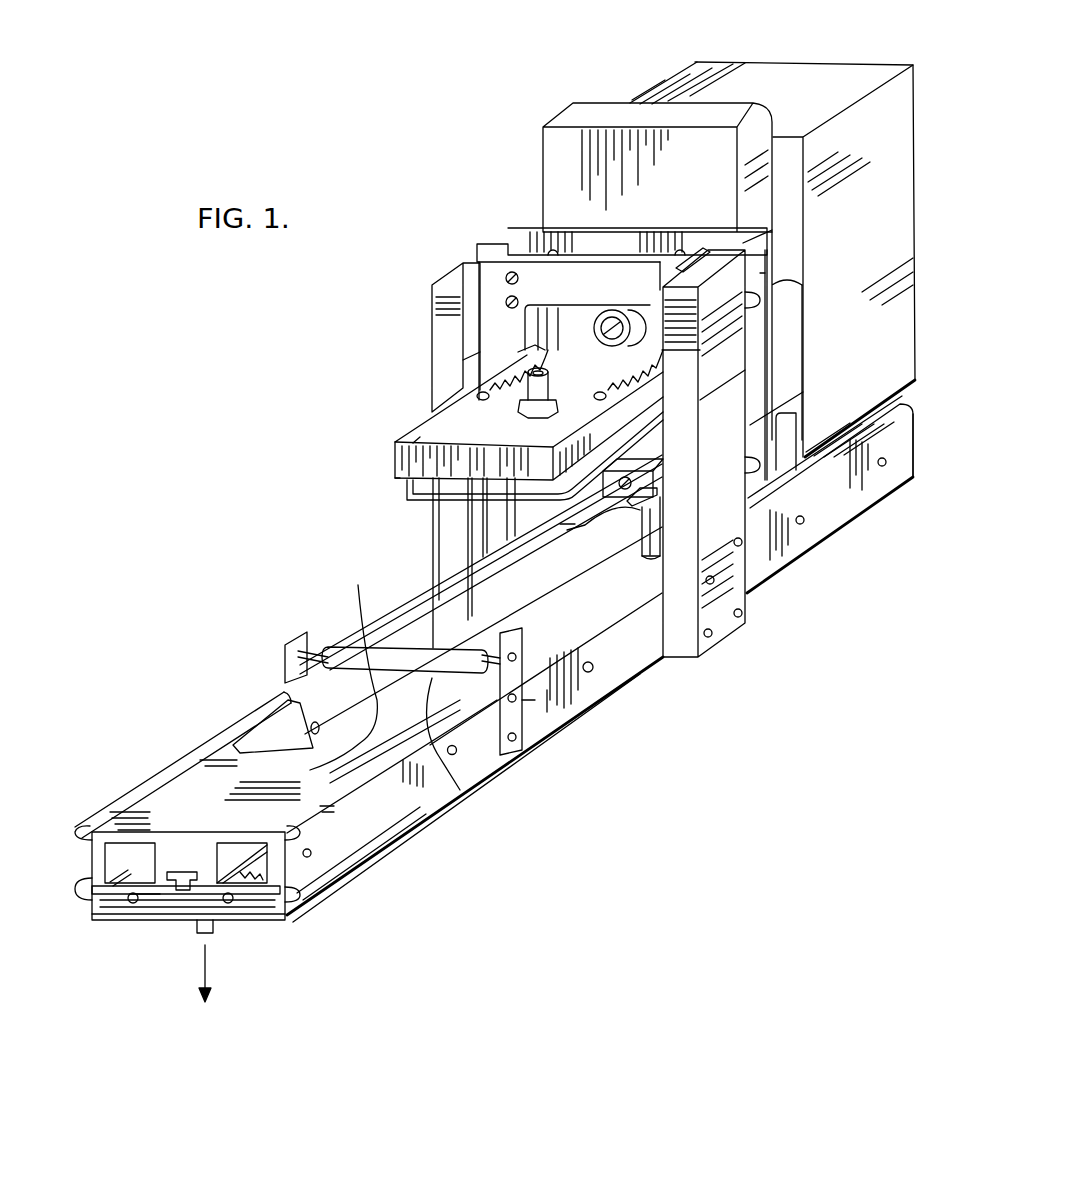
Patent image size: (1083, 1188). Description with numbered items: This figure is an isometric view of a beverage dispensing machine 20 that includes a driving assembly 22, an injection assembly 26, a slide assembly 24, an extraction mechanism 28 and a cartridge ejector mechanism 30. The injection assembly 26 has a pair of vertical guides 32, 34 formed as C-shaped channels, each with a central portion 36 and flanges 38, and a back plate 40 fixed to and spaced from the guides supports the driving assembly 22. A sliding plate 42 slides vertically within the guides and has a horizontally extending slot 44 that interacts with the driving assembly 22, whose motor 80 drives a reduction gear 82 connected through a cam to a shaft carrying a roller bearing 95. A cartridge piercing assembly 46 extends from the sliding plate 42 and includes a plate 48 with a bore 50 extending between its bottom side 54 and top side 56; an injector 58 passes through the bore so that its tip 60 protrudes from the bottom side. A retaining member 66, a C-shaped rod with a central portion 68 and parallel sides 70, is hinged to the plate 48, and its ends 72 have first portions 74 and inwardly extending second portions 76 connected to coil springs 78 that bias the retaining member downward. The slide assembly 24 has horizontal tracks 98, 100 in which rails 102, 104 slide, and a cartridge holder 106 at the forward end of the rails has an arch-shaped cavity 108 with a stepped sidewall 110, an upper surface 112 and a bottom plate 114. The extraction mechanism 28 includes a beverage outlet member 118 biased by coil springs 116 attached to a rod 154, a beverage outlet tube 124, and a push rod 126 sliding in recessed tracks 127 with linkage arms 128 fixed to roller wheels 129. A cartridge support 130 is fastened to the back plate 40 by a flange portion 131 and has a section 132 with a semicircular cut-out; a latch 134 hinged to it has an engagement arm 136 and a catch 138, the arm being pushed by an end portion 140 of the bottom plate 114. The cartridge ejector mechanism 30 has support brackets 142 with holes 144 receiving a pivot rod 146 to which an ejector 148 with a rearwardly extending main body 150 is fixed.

The beverage dispensing machine 20 is at (552, 70).
The driving assembly 22 is at (880, 113).
The motor 80 is at (766, 101).
The injection assembly 26 is at (483, 292).
The central portions 36 is at (752, 232).
The sliding plate 42 is at (566, 299).
The horizontally extending slot 44 is at (645, 318).
The roller bearing 95 is at (607, 296).
The back plate 40 is at (762, 274).
The reduction gear 82 is at (790, 348).
The vertical guide 32 is at (782, 410).
The flanges 38 is at (481, 258).
The ends 72 is at (460, 348).
The vertical guide 34 is at (460, 356).
The first portions 74 is at (458, 368).
The second portions 76 is at (534, 322).
The injector 58 is at (548, 386).
The plate 48 is at (471, 440).
The bore 50 is at (537, 420).
The cartridge piercing assembly 46 is at (380, 451).
The top side 56 is at (413, 443).
The bottom side 54 is at (390, 478).
The coil springs 78 is at (665, 387).
The flange portion 131 is at (650, 471).
The latch 134 is at (660, 503).
The section 132 is at (573, 530).
The cartridge support 130 is at (657, 517).
The slide assembly 24 is at (827, 513).
The horizontal track 98 is at (862, 497).
The sides 70 is at (440, 488).
The retaining member 66 is at (407, 507).
The central portion 68 is at (432, 528).
The tip 60 is at (436, 553).
The horizontal track 100 is at (470, 601).
The engagement arm 136 is at (652, 558).
The catch 138 is at (632, 507).
The hole 144 is at (527, 633).
The end portion 140 is at (373, 649).
The ejector 148 is at (337, 645).
The pivot rod 146 is at (313, 647).
The roller wheels 129 is at (320, 718).
The stepped sidewall 110 is at (242, 745).
The rail 104 is at (263, 707).
The cartridge holder 106 is at (200, 787).
The upper surface 112 is at (232, 811).
The beverage outlet member 118 is at (183, 872).
The extraction mechanism 28 is at (240, 874).
The linkage arms 128 is at (88, 900).
The recessed tracks 127 is at (118, 885).
The coil springs 116 is at (142, 887).
The rod 154 is at (177, 910).
The beverage outlet tube 124 is at (210, 923).
The push rod 126 is at (252, 920).
The rail 102 is at (357, 833).
The arch-shaped cavity 108 is at (400, 845).
The bottom plate 114 is at (395, 800).
The main body 150 is at (445, 775).
The cartridge ejector mechanism 30 is at (502, 773).
The support brackets 142 is at (523, 710).